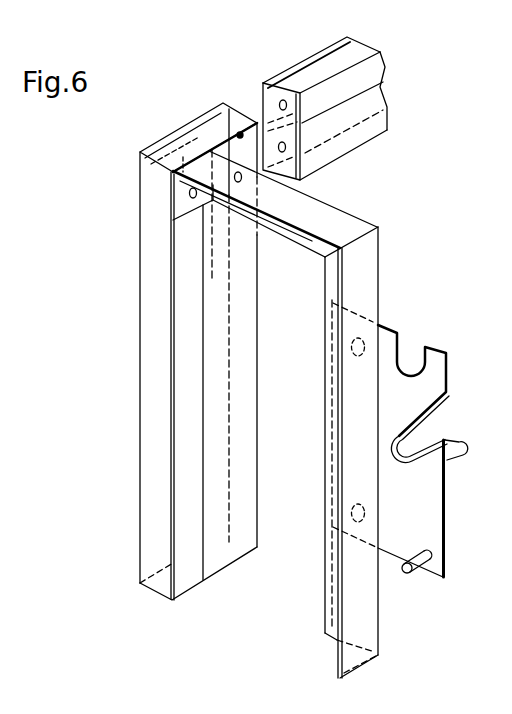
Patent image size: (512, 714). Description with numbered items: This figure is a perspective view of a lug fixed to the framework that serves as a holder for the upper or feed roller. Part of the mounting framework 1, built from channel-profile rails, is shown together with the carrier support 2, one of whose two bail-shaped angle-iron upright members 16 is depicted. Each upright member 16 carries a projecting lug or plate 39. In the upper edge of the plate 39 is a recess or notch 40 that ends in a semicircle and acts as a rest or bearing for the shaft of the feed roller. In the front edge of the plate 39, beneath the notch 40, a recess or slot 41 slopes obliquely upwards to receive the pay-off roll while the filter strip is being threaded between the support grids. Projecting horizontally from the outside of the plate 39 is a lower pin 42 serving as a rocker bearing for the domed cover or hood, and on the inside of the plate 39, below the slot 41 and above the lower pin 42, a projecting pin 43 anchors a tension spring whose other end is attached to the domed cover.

The mounting framework 1 is at (148, 302).
The carrier support 2 is at (377, 226).
The upright member 16 is at (365, 302).
The projecting lug or plate 39 is at (413, 517).
The recess or notch 40 is at (412, 362).
The recess or slot 41 is at (410, 452).
The lower pin 42 is at (418, 571).
The projecting pin 43 is at (460, 457).